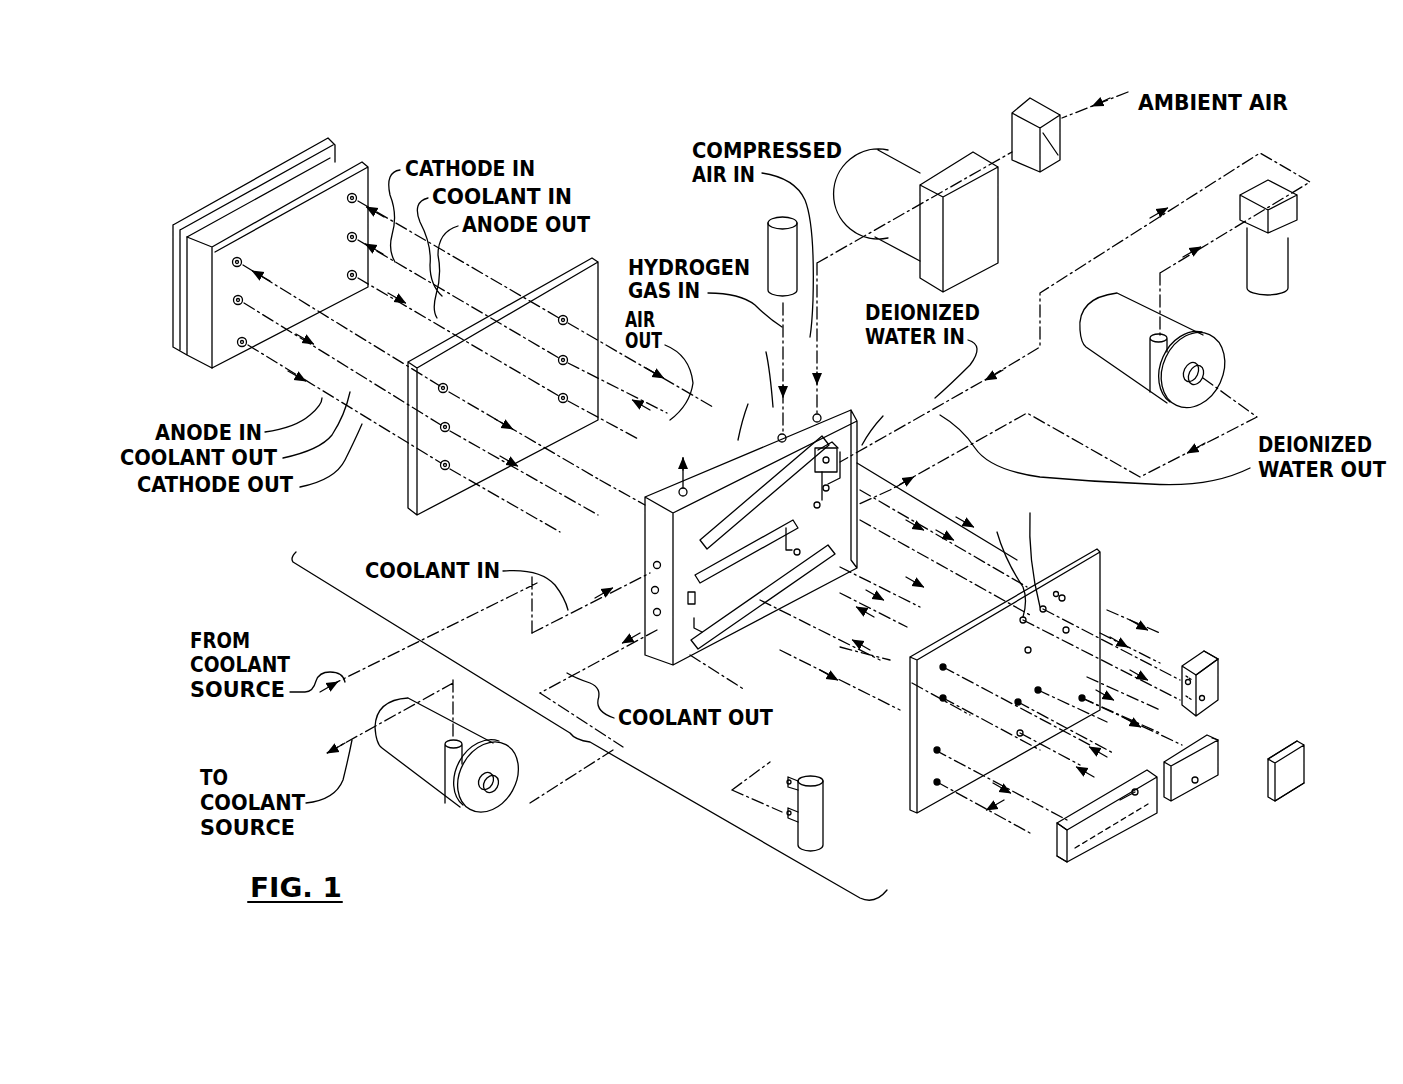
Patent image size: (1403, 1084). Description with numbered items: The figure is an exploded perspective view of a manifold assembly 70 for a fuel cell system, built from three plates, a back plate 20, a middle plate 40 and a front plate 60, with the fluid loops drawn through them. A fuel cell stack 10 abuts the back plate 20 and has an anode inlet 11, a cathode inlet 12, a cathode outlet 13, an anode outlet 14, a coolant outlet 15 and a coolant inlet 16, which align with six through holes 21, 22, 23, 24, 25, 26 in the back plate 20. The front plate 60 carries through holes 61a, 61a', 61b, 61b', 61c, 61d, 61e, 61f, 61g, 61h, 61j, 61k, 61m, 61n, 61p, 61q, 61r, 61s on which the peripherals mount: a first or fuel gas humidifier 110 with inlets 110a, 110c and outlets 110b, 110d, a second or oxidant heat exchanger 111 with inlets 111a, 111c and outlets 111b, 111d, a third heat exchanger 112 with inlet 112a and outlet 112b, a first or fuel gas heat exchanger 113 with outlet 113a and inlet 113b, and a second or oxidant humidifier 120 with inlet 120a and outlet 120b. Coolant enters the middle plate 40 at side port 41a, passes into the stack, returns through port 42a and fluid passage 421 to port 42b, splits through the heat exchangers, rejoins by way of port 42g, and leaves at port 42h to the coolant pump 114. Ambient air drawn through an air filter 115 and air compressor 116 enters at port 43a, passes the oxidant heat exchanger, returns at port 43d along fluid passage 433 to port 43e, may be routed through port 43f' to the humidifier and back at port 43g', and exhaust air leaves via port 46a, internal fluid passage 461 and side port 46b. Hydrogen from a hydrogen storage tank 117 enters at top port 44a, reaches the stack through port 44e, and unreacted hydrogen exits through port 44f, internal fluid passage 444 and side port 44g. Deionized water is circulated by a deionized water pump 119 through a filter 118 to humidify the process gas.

The fuel cell stack 10 is at (173, 390).
The anode inlet 11 is at (243, 256).
The cathode inlet 12 is at (347, 203).
The cathode outlet 13 is at (238, 347).
The anode outlet 14 is at (347, 279).
The coolant outlet 15 is at (243, 297).
The coolant inlet 16 is at (347, 241).
The back plate 20 is at (594, 257).
The through hole 21 is at (559, 324).
The through hole 22 is at (559, 364).
The through hole 23 is at (559, 402).
The through hole 24 is at (448, 386).
The through hole 25 is at (441, 430).
The through hole 26 is at (441, 469).
The middle plate 40 is at (843, 410).
The port 41a is at (652, 562).
The port 42a is at (645, 520).
The port 42b is at (735, 665).
The port 42g is at (915, 480).
The port 42h is at (620, 650).
The port 43a is at (818, 408).
The port 43d is at (815, 622).
The port 43e is at (698, 598).
The port 43f' is at (885, 419).
The port 43g' is at (736, 411).
The port 44a is at (750, 368).
The port 44e is at (675, 490).
The port 44f is at (705, 465).
The port 44g is at (845, 462).
The port 46a is at (650, 595).
The port 46b is at (658, 620).
The fluid passage 421 is at (757, 618).
The fluid passage 433 is at (735, 558).
The internal fluid passage 444 is at (765, 510).
The internal fluid passage 461 is at (640, 620).
The front plate 60 is at (1100, 548).
The through hole 61a is at (1000, 635).
The through hole 61a' is at (915, 692).
The through hole 61b is at (996, 703).
The through hole 61b' is at (960, 714).
The through hole 61c is at (1047, 604).
The through hole 61d is at (1068, 597).
The through hole 61e is at (1060, 590).
The through hole 61f is at (1070, 629).
The through hole 61g is at (937, 751).
The through hole 61h is at (937, 783).
The through hole 61j is at (993, 800).
The through hole 61k is at (1018, 737).
The through hole 61m is at (1086, 698).
The through hole 61n is at (1105, 711).
The through hole 61p is at (1004, 562).
The through hole 61q is at (1026, 545).
The through hole 61r is at (1035, 680).
The through hole 61s is at (1032, 649).
The manifold assembly 70 is at (568, 733).
The first or fuel gas humidifier 110 is at (1222, 678).
The inlet 110a is at (1186, 676).
The outlet 110b is at (1210, 660).
The inlet 110c is at (1212, 652).
The outlet 110d is at (1206, 699).
The second or oxidant heat exchanger 111 is at (1085, 862).
The inlet 111a is at (1058, 826).
The outlet 111b is at (1138, 798).
The inlet 111c is at (1058, 858).
The outlet 111d is at (1112, 808).
The third heat exchanger 112 is at (1195, 783).
The inlet 112a is at (1200, 730).
The outlet 112b is at (1195, 784).
The first or fuel gas heat exchanger 113 is at (790, 830).
The outlet 113a is at (775, 765).
The inlet 113b is at (790, 825).
The coolant pump 114 is at (438, 795).
The air filter 115 is at (1012, 128).
The air compressor 116 is at (998, 230).
The hydrogen storage tank 117 is at (768, 247).
The filter 118 is at (1290, 252).
The deionized water pump 119 is at (1210, 335).
The second or oxidant humidifier 120 is at (1304, 770).
The inlet 120a is at (1280, 802).
The outlet 120b is at (1285, 752).